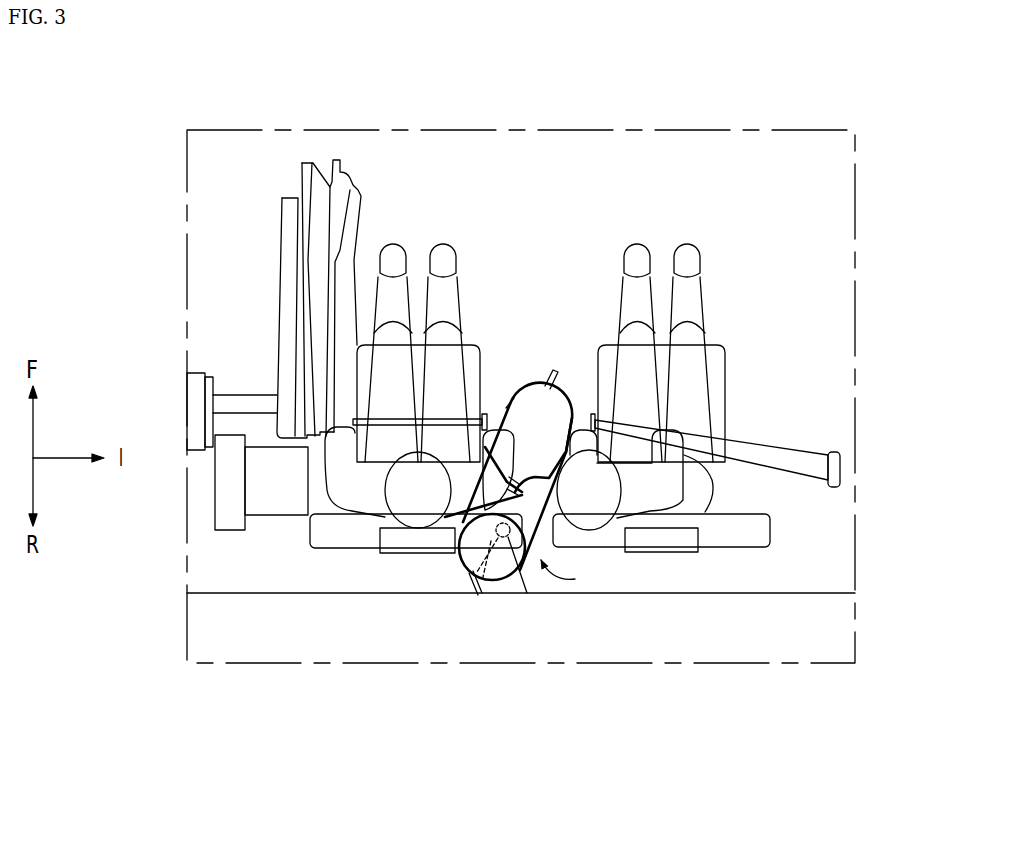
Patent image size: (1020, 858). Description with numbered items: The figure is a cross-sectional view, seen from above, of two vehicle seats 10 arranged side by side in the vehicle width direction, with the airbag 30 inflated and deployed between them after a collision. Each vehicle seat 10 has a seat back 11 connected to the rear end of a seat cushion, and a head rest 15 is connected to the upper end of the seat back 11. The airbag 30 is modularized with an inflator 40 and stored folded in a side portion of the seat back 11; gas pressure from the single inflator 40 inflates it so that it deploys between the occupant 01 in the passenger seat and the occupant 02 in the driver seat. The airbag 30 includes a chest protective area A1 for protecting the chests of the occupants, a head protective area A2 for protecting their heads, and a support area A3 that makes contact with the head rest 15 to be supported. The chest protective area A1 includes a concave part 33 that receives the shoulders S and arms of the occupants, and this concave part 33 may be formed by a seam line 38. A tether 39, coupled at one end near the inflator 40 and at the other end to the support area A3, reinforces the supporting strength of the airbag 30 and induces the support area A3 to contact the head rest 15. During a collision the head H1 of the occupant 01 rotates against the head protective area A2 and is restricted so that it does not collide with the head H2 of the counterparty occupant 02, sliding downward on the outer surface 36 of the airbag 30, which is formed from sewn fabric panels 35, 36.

The vehicle seat 10 is at (752, 527).
The seat back 11 is at (325, 542).
The head rest 15 is at (393, 543).
The airbag 30 is at (567, 382).
The concave part 33 is at (530, 506).
The fabric panel 35 is at (538, 380).
The outer surface 36 is at (572, 404).
The seam line 38 is at (495, 502).
The tether 39 is at (488, 557).
The inflator 40 is at (576, 579).
The occupant 01 is at (712, 498).
The occupant 02 is at (383, 443).
The shoulders S is at (360, 487).
The head H1 is at (593, 520).
The head H2 is at (418, 503).
The chest protective area A1 is at (508, 405).
The head protective area A2 is at (511, 541).
The support area A3 is at (486, 552).